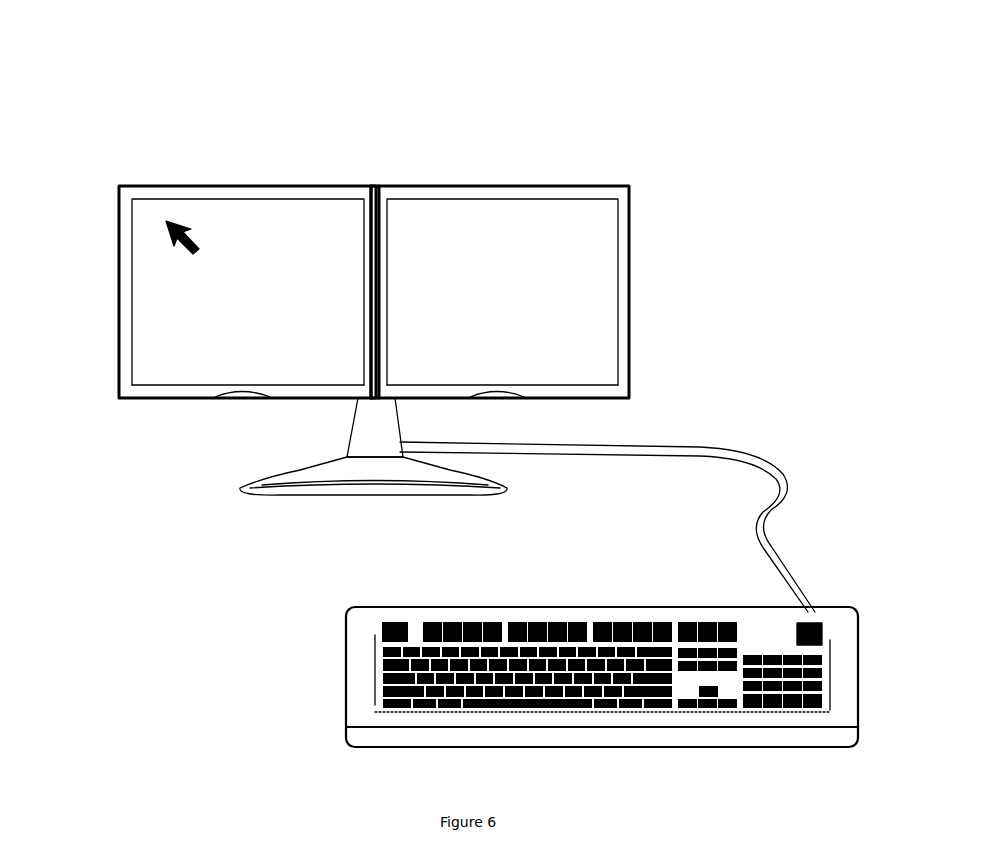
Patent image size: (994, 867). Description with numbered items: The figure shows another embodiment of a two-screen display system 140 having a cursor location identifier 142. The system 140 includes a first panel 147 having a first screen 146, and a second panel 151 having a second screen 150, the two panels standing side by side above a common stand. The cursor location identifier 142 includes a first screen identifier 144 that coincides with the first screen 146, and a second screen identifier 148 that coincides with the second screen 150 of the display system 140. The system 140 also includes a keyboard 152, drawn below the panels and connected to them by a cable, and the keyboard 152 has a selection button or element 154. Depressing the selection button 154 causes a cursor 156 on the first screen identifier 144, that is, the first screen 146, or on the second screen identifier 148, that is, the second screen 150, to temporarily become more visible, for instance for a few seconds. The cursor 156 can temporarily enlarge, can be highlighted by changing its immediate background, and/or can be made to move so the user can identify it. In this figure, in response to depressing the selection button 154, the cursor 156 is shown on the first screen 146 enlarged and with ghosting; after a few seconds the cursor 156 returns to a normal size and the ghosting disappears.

The two-screen display system 140 is at (358, 505).
The cursor location identifier 142 is at (379, 160).
The first screen identifier 144 is at (185, 303).
The first screen 146 is at (258, 206).
The first panel 147 is at (317, 208).
The second screen identifier 148 is at (563, 304).
The second screen 150 is at (490, 215).
The second panel 151 is at (443, 212).
The keyboard 152 is at (492, 605).
The selection button 154 is at (808, 622).
The cursor 156 is at (163, 219).